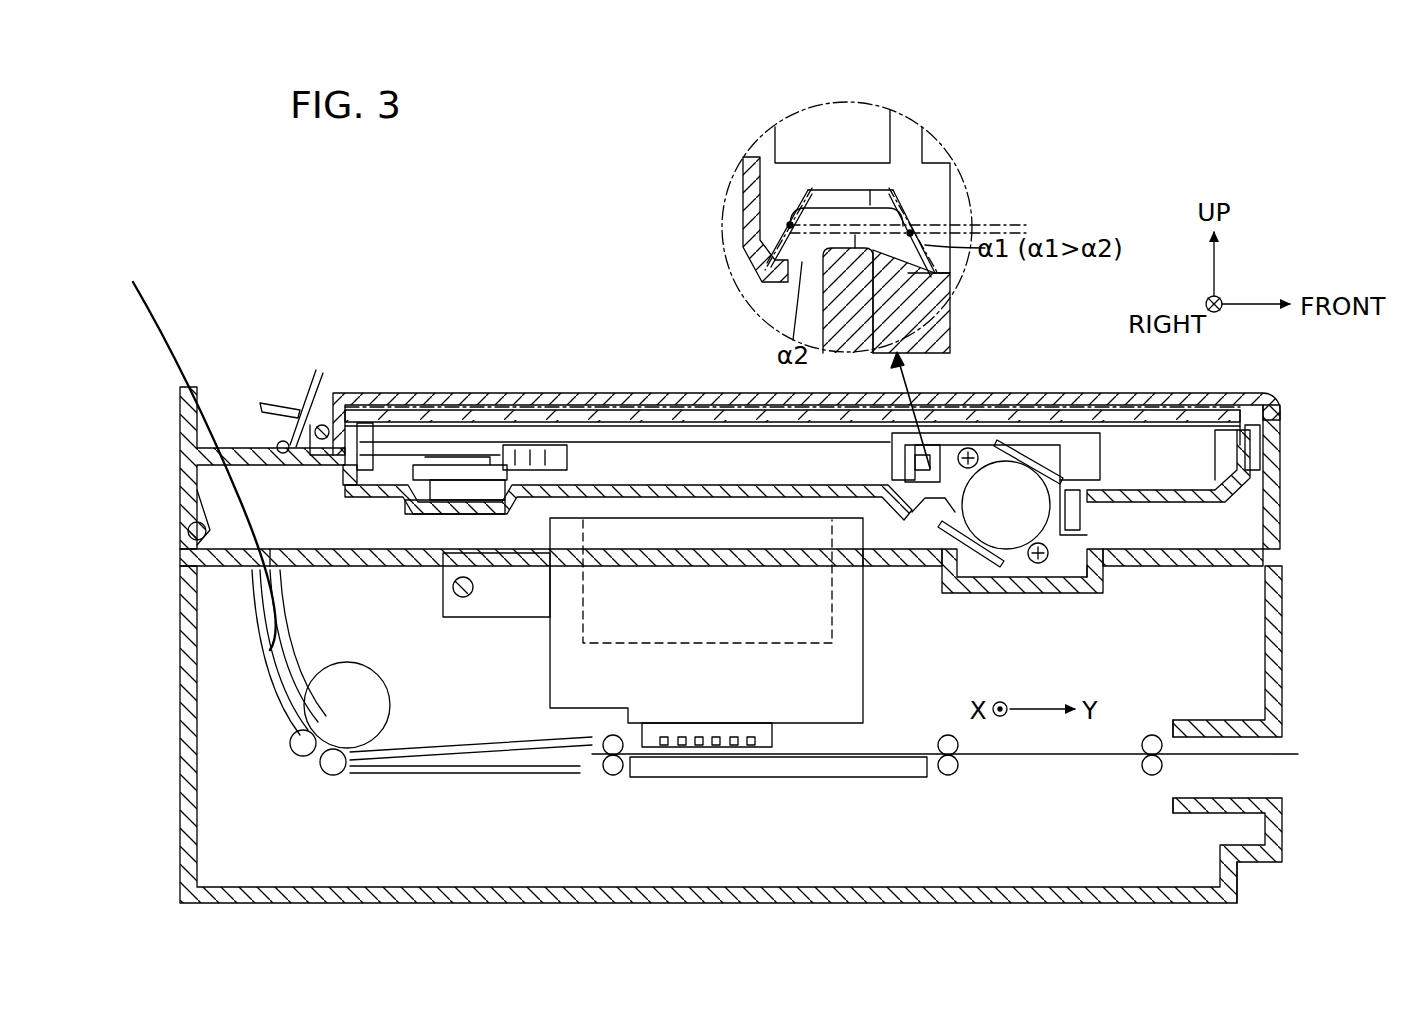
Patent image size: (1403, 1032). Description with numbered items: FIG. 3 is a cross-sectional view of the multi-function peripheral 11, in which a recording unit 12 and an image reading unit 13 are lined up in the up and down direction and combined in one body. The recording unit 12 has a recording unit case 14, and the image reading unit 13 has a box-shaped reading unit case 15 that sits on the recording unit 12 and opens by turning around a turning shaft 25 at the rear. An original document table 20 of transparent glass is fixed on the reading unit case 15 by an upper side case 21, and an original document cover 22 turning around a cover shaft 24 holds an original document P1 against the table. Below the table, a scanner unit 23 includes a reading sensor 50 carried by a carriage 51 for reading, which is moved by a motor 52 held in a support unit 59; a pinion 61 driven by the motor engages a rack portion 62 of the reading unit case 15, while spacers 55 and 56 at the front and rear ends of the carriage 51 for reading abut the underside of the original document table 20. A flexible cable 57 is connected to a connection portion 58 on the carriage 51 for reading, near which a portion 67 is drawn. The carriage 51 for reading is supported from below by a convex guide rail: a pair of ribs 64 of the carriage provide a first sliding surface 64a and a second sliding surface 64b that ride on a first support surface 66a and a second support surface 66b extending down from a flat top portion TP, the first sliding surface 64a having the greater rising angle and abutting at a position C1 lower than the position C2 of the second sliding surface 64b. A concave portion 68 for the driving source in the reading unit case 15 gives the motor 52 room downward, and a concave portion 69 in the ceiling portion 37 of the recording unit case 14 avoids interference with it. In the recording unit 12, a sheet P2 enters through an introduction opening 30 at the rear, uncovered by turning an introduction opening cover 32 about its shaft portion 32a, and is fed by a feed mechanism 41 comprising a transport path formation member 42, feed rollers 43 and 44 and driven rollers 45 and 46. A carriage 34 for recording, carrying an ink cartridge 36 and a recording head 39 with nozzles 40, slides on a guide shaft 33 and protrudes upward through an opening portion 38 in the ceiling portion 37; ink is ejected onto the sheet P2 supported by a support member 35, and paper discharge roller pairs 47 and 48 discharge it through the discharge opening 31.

The multi-function peripheral 11 is at (380, 230).
The recording unit 12 is at (163, 720).
The image reading unit 13 is at (170, 492).
The recording unit case 14 is at (1276, 842).
The reading unit case 15 is at (1245, 490).
The original document table 20 is at (700, 398).
The upper side case 21 is at (376, 400).
The original document cover 22 is at (545, 410).
The scanner unit 23 is at (1213, 432).
The cover shaft 24 is at (325, 425).
The turning shaft 25 is at (188, 532).
The introduction opening 30 is at (283, 548).
The discharge opening 31 is at (1268, 792).
The introduction opening cover 32 is at (312, 368).
The shaft portion 32a is at (275, 408).
The guide shaft 33 is at (452, 582).
The carriage for recording 34 is at (865, 672).
The support member 35 is at (773, 779).
The ink cartridge 36 is at (707, 645).
The ceiling portion 37 is at (343, 568).
The opening portion 38 is at (873, 568).
The recording head 39 is at (775, 735).
The nozzles 40 is at (672, 735).
The feed mechanism 41 is at (286, 770).
The transport path formation member 42 is at (282, 690).
The feed roller 43 is at (372, 676).
The feed roller 44 is at (611, 776).
The driven roller 45 is at (332, 772).
The driven roller 46 is at (612, 735).
The paper discharge roller pair 47 is at (958, 750).
The paper discharge roller pair 48 is at (1142, 750).
The reading sensor 50 is at (580, 452).
The carriage for reading 51 is at (632, 460).
The motor 52 is at (1003, 440).
The spacer 55 is at (1262, 452).
The spacer 56 is at (372, 440).
The flexible cable 57 is at (512, 494).
The connection portion 58 is at (517, 445).
The support unit 59 is at (1030, 447).
The pinion 61 is at (1078, 522).
The rack portion 62 is at (1088, 510).
The ribs 64 is at (770, 262).
The first sliding surface 64a is at (900, 194).
The second sliding surface 64b is at (800, 186).
The first support surface 66a is at (940, 242).
The second support surface 66b is at (828, 266).
The recess 67 is at (405, 514).
The concave portion for the driving source 68 is at (1012, 580).
The concave portion 69 is at (1090, 582).
The original document P1 is at (452, 403).
The sheet P2 is at (152, 296).
The top portion TP is at (822, 205).
The position C1 is at (913, 233).
The position C2 is at (787, 225).